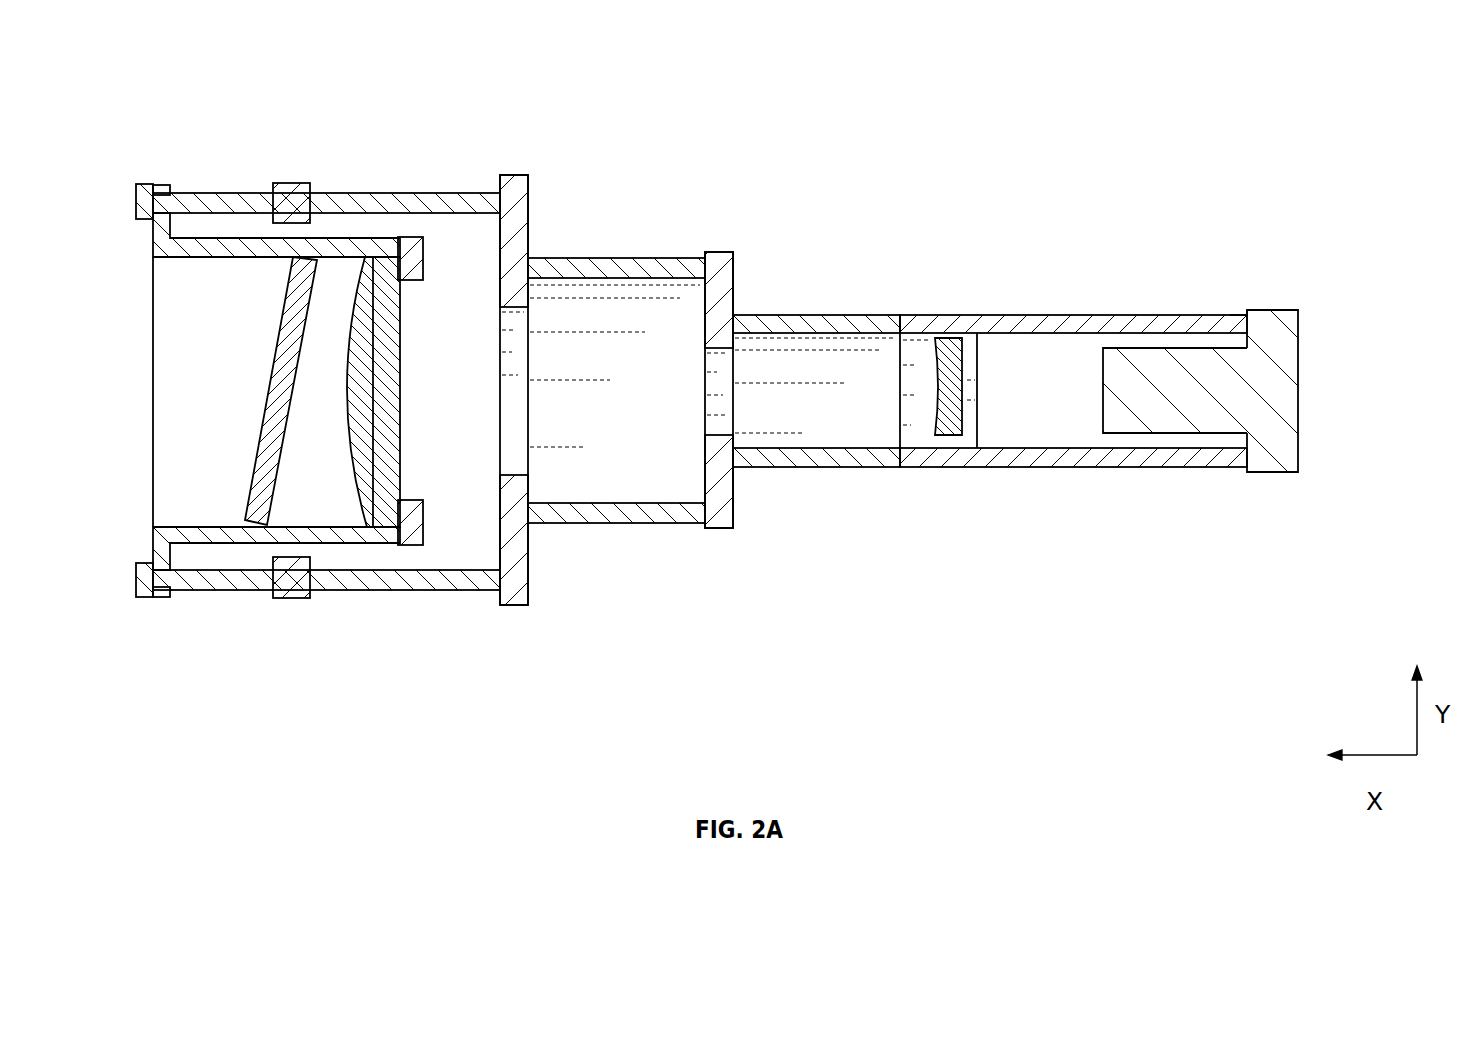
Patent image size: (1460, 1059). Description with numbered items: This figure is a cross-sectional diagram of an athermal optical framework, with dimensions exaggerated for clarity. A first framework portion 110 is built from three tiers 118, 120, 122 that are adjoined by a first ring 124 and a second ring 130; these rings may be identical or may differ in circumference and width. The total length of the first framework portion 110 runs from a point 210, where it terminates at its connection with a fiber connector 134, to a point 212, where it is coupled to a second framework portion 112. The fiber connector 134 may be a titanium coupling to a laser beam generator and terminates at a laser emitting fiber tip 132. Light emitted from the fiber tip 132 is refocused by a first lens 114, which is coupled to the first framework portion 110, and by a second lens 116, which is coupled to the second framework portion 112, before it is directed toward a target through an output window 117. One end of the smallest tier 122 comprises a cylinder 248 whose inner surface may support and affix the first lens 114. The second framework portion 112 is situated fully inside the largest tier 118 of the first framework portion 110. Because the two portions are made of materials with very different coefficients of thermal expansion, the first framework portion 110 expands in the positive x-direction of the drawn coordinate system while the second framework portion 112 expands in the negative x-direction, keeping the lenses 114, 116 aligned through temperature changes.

The first framework portion 110 is at (1298, 607).
The second framework portion 112 is at (172, 258).
The first lens 114 is at (935, 394).
The second lens 116 is at (348, 470).
The output window 117 is at (250, 415).
The tier 118 is at (528, 132).
The tier 120 is at (733, 162).
The tier 122 is at (1245, 245).
The first ring 124 is at (717, 527).
The second ring 130 is at (527, 590).
The laser emitting fiber tip 132 is at (1103, 392).
The fiber connector 134 is at (1293, 348).
The point 210 is at (1247, 310).
The point 212 is at (152, 605).
The cylinder 248 is at (985, 450).